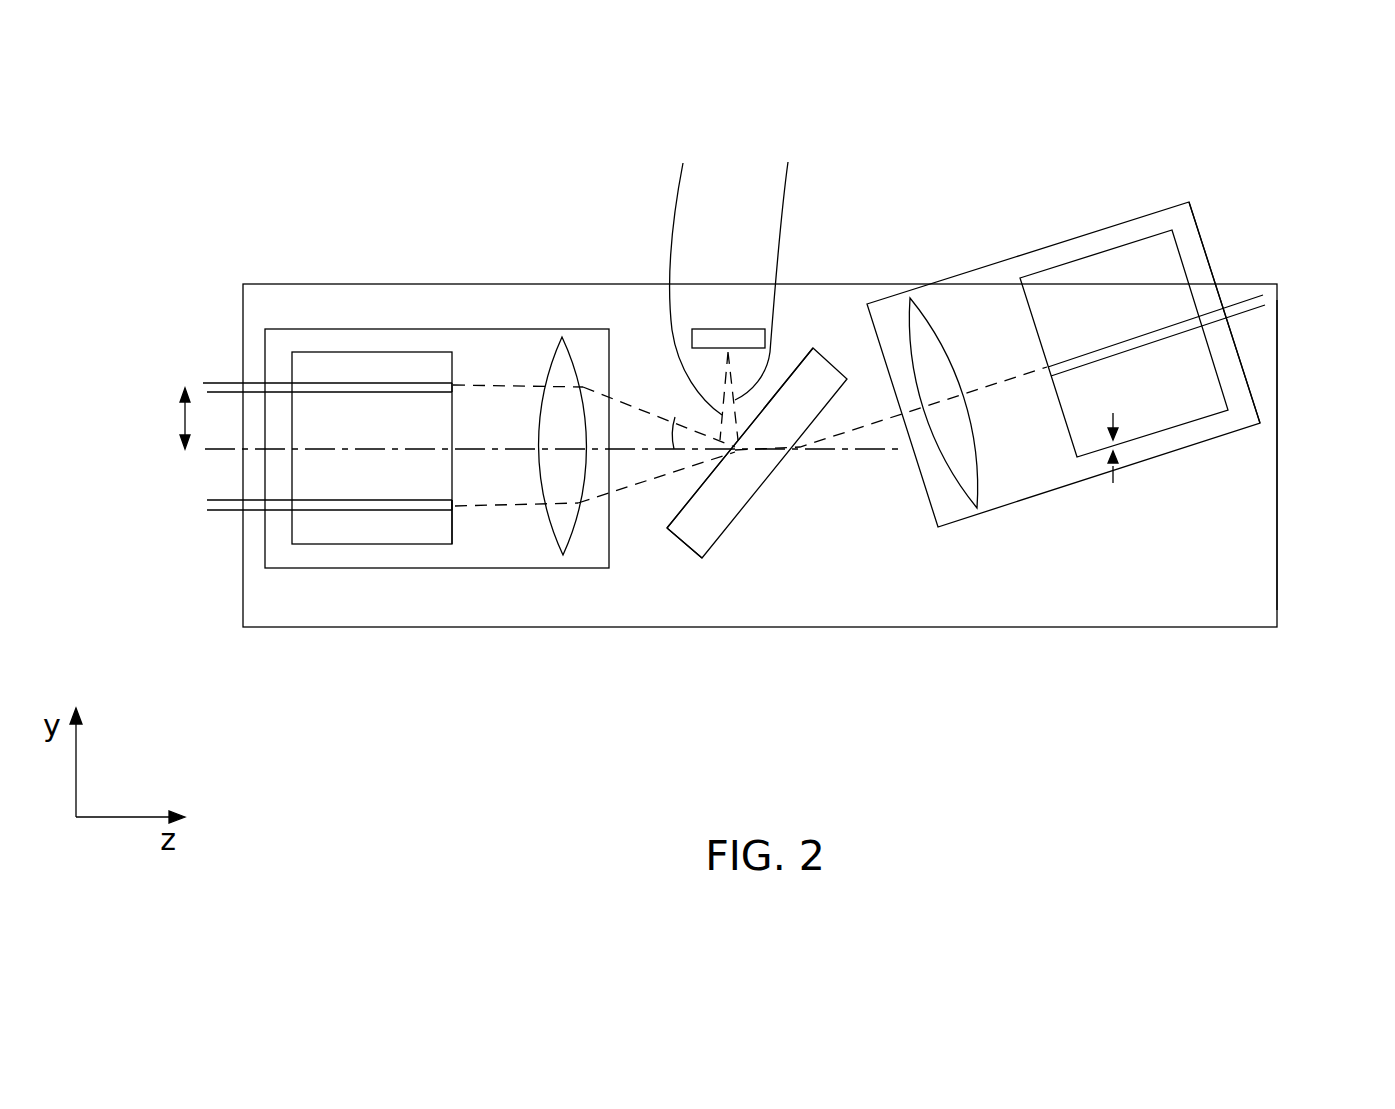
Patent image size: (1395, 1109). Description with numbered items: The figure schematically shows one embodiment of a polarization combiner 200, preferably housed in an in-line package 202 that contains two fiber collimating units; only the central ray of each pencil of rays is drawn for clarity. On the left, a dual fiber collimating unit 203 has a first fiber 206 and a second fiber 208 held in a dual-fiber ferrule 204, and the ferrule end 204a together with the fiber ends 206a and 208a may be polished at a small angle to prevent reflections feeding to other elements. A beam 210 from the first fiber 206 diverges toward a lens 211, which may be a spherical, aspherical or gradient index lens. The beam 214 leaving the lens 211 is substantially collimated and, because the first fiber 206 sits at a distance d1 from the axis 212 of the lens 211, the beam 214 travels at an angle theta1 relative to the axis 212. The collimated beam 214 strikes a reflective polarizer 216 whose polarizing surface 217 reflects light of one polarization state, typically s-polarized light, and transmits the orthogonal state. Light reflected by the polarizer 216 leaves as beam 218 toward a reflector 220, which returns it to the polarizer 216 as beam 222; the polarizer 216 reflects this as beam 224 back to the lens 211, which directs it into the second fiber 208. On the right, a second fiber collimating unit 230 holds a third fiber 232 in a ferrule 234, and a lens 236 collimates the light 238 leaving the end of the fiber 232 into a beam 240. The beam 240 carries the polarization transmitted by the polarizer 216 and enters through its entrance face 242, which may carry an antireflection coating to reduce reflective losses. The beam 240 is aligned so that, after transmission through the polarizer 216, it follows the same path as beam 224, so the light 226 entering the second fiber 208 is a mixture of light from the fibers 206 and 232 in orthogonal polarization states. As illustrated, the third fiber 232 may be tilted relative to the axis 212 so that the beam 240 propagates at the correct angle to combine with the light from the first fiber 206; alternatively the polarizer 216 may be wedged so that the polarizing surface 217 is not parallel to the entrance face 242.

The polarization combiner 200 is at (263, 287).
The in-line package 202 is at (1277, 403).
The dual fiber collimating unit 203 is at (380, 573).
The dual-fiber ferrule 204 is at (322, 548).
The ferrule end 204a is at (453, 512).
The first fiber 206 is at (235, 383).
The fiber end 206a is at (452, 384).
The second fiber 208 is at (233, 513).
The fiber end 208a is at (453, 510).
The beam 210 is at (502, 385).
The lens 211 is at (568, 333).
The axis 212 is at (212, 448).
The beam 214 is at (632, 400).
The reflective polarizer 216 is at (815, 345).
The polarizing surface 217 is at (806, 352).
The beam 218 is at (776, 262).
The reflector 220 is at (733, 329).
The beam 222 is at (689, 265).
The beam 224 is at (635, 492).
The light 226 is at (507, 508).
The second fiber collimating unit 230 is at (1097, 347).
The third fiber 232 is at (1257, 297).
The ferrule 234 is at (1190, 277).
The lens 236 is at (975, 507).
The light 238 is at (1017, 393).
The beam 240 is at (880, 420).
The entrance face 242 is at (728, 527).
The distance d1 is at (158, 418).
The angle theta1 is at (672, 417).